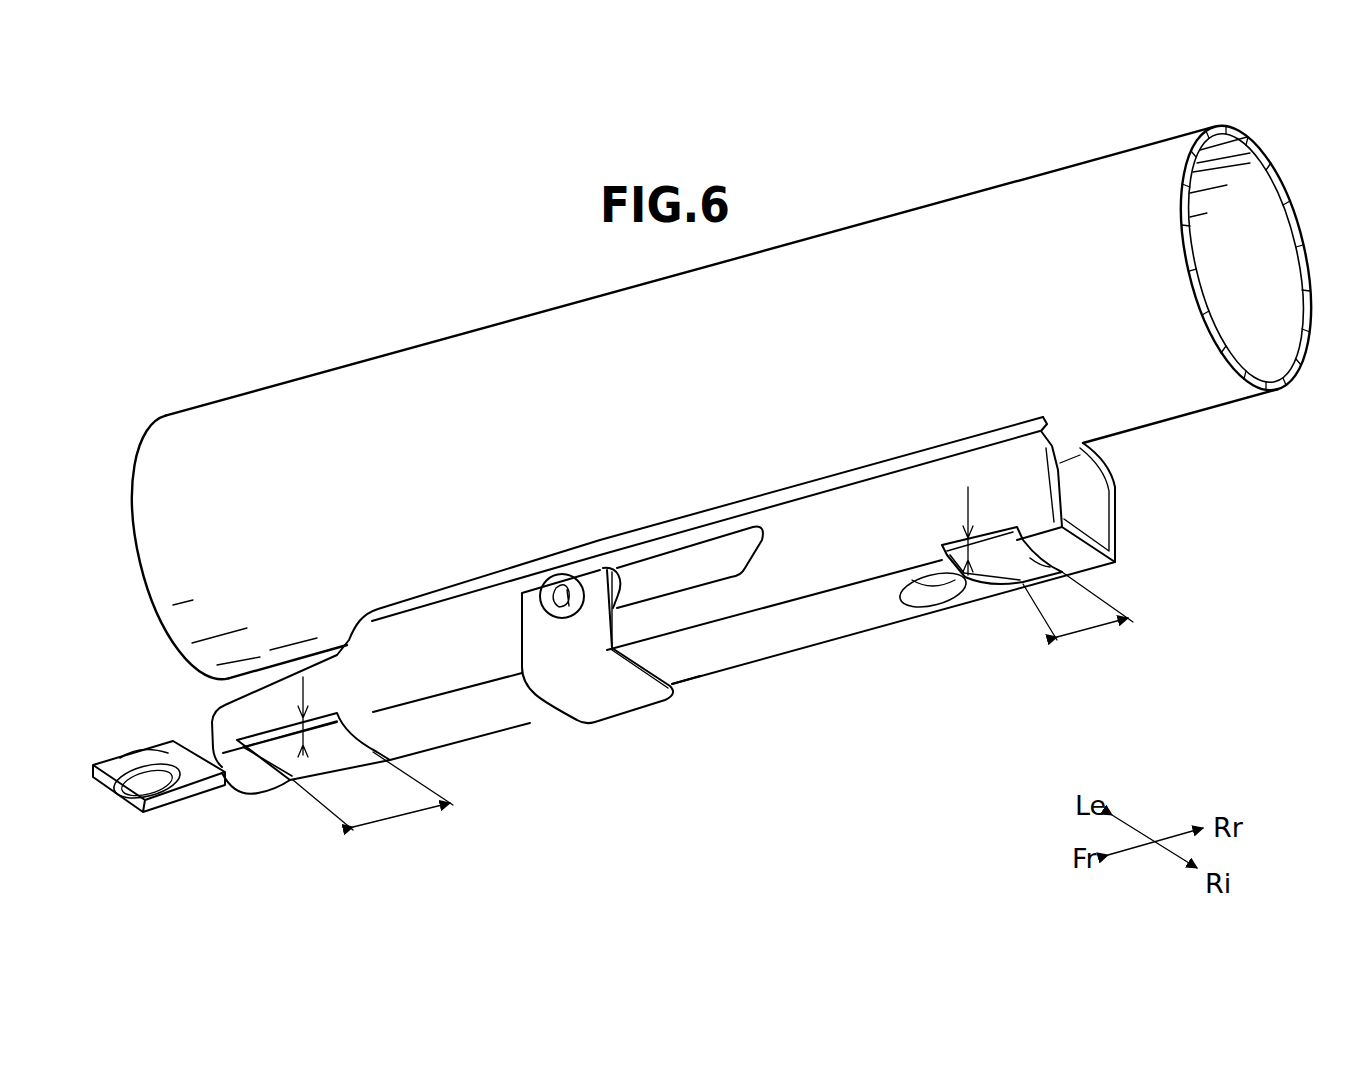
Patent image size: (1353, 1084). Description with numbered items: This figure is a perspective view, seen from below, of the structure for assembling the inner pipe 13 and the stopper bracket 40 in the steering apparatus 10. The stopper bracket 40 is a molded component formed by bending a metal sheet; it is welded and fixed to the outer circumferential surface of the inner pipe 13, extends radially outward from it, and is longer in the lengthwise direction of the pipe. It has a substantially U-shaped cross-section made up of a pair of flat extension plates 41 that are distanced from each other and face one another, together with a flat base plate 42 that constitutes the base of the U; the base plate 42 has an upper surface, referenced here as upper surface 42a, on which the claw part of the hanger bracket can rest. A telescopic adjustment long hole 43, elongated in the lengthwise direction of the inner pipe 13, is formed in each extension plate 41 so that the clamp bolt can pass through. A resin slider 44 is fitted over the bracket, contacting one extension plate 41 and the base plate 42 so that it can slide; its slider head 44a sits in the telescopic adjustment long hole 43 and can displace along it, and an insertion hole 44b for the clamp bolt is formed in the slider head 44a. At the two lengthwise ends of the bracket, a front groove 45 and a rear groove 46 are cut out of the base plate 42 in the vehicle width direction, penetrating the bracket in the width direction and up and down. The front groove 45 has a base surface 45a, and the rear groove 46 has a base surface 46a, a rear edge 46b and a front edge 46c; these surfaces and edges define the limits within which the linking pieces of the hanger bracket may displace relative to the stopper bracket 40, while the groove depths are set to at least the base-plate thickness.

The steering apparatus 10 is at (261, 274).
The inner pipe 13 is at (1030, 190).
The stopper bracket 40 is at (1203, 492).
The extension plate 41 is at (1047, 477).
The base plate 42 is at (711, 643).
The bottom surface 42a is at (721, 653).
The telescopic adjustment long hole 43 is at (693, 560).
The slider 44 is at (553, 606).
The slider head 44a is at (620, 587).
The insertion hole 44b is at (553, 593).
The front groove 45 is at (273, 738).
The base surface of the front groove 45a is at (300, 766).
The rear groove 46 is at (1045, 541).
The base surface of the rear groove 46a is at (999, 576).
The rear edge of the rear groove 46b is at (1065, 577).
The front edge of the rear groove 46c is at (977, 582).